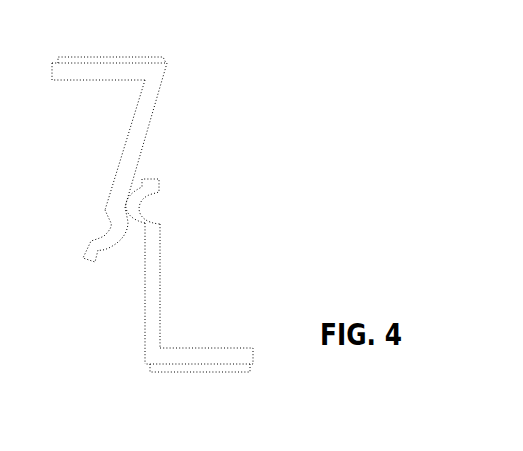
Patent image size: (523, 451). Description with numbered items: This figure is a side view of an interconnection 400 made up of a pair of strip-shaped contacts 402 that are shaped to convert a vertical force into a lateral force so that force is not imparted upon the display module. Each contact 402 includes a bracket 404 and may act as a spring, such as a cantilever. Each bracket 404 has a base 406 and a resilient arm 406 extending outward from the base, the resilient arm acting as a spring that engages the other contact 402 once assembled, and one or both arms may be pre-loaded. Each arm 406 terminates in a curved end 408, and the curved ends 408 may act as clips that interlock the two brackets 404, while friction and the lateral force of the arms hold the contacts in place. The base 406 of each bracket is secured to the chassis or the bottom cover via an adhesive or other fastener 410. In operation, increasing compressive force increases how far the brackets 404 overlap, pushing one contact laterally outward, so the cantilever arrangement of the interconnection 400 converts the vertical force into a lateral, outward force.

The interconnection 400 is at (226, 52).
The strip-shaped contact 402 is at (122, 155).
The bracket 404 is at (128, 135).
The base and resilient arm 406 is at (72, 82).
The curved end 408 is at (102, 238).
The adhesive or other fastener 410 is at (162, 60).